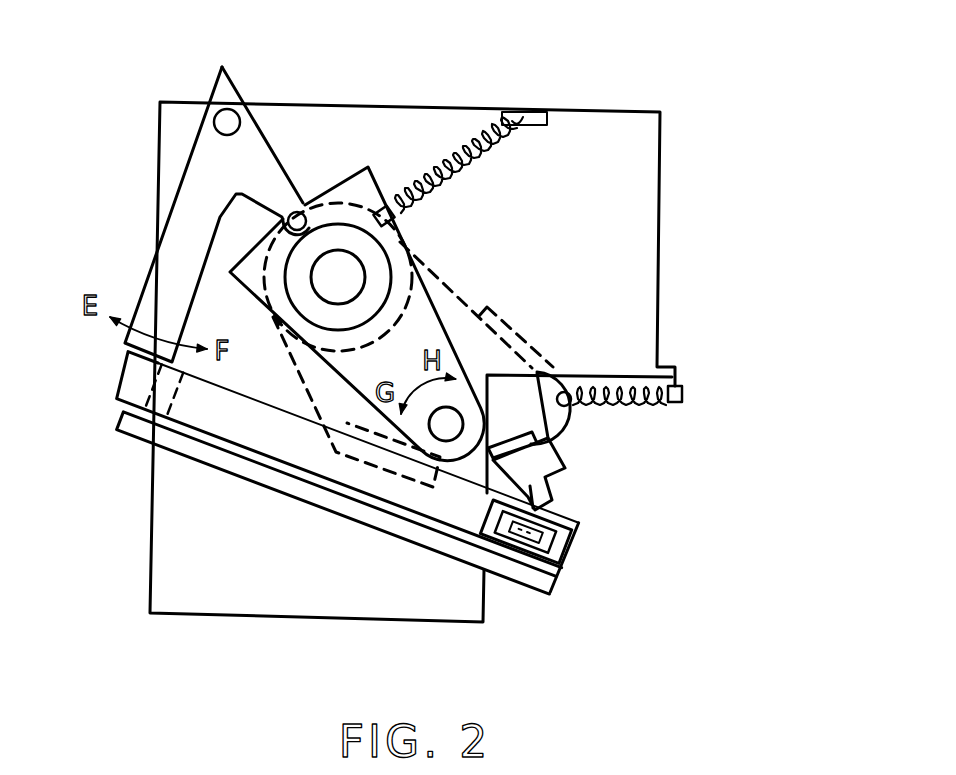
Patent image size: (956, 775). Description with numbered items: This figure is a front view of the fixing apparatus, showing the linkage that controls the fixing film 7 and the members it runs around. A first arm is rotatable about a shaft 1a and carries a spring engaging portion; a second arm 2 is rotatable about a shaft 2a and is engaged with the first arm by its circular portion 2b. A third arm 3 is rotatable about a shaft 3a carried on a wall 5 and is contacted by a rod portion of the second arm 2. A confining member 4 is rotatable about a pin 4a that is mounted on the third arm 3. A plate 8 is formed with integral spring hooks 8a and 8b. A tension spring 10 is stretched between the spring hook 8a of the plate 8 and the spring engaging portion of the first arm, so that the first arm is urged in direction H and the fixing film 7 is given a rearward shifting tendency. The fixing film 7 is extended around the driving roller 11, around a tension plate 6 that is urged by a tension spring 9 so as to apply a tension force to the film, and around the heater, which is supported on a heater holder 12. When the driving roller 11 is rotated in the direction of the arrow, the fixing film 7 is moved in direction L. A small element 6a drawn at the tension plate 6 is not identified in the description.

The shaft 1a is at (445, 428).
The second arm 2 is at (172, 272).
The shaft 2a is at (224, 118).
The circular portion 2b is at (298, 218).
The third arm 3 is at (257, 430).
The shaft 3a is at (140, 445).
The confining member 4 is at (567, 468).
The pin 4a is at (573, 552).
The wall 5 is at (533, 578).
The tension plate 6 is at (570, 428).
The cam pivot pin 6a is at (572, 390).
The fixing film 7 is at (500, 300).
The plate 8 is at (628, 198).
The spring hook 8a is at (533, 112).
The spring hook 8b is at (683, 375).
The tension spring 9 is at (633, 402).
The tension spring 10 is at (452, 150).
The driving roller 11 is at (345, 275).
The heater holder 12 is at (393, 473).